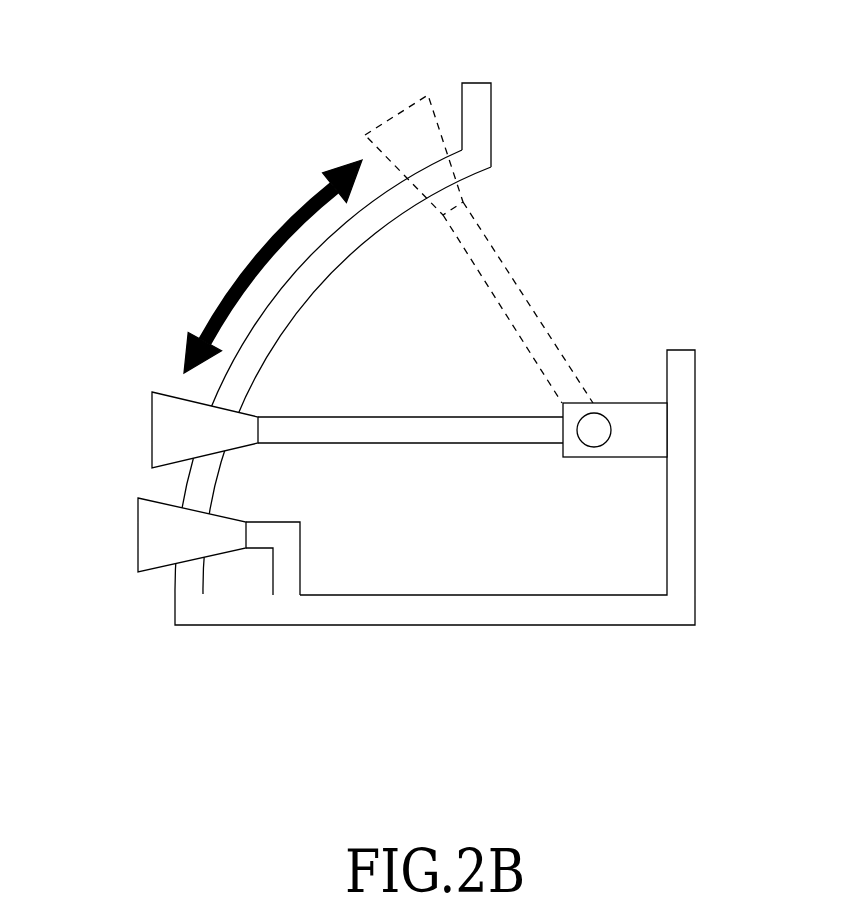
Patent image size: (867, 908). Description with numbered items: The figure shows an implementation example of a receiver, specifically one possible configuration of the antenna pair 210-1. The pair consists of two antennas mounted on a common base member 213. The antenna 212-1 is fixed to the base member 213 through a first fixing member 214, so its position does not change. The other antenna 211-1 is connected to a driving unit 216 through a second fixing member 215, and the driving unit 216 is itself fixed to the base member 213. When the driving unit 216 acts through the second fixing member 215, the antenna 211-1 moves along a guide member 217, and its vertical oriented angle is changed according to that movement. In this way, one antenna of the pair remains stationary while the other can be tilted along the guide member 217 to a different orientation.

The antenna pair 210-1 is at (513, 63).
The antenna 211-1 is at (152, 430).
The antenna 212-1 is at (138, 535).
The base member 213 is at (435, 625).
The first fixing member 214 is at (297, 570).
The second fixing member 215 is at (442, 443).
The driving unit 216 is at (620, 457).
The guide member 217 is at (340, 265).